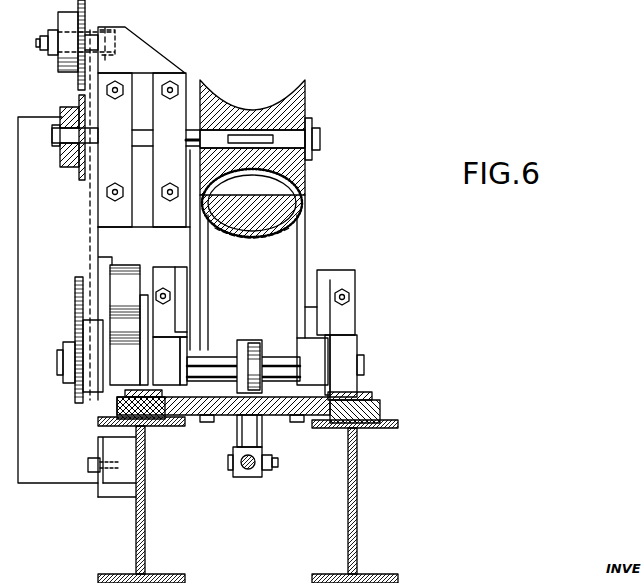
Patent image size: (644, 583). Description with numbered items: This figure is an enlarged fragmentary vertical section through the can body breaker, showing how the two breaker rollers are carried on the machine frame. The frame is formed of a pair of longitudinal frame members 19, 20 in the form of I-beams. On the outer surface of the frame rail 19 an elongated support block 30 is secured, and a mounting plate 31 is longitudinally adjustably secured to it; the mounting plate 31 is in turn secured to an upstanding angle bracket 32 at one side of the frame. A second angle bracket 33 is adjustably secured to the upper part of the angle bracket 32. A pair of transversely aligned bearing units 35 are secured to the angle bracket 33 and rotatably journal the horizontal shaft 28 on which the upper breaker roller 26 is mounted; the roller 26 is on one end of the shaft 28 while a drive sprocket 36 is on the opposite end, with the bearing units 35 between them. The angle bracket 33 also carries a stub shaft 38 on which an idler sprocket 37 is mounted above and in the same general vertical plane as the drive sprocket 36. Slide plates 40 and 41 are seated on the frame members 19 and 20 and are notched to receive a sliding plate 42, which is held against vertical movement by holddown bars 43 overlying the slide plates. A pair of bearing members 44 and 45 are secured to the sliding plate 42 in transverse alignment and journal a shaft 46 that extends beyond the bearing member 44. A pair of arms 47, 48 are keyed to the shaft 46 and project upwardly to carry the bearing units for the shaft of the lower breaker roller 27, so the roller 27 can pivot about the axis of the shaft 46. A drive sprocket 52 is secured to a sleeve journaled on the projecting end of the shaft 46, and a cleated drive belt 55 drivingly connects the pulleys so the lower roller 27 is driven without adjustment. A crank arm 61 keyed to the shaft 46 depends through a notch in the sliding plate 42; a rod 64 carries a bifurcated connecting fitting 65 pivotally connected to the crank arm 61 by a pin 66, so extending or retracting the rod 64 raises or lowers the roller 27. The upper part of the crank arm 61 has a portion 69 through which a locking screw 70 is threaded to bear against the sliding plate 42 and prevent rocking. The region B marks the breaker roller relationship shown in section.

The longitudinal frame member 19 is at (146, 546).
The longitudinal frame member 20 is at (358, 536).
The upper breaker roller 26 is at (306, 106).
The lower breaker roller 27 is at (292, 264).
The horizontal shaft 28 is at (318, 142).
The ball B is at (306, 206).
The support block 30 is at (125, 498).
The mounting plate 31 is at (104, 486).
The angle bracket 32 is at (42, 484).
The second angle bracket 33 is at (142, 62).
The bearing units 35 is at (166, 207).
The drive sprocket 36 is at (70, 168).
The idler sprocket 37 is at (86, 22).
The stub shaft 38 is at (44, 42).
The slide plate 40 is at (152, 420).
The slide plate 41 is at (384, 414).
The sliding plate 42 is at (222, 418).
The holddown bars 43 is at (126, 390).
The bearing member 44 is at (168, 372).
The bearing member 45 is at (352, 350).
The shaft 46 is at (364, 368).
The arm 47 is at (196, 348).
The arm 48 is at (306, 350).
The drive sprocket 52 is at (76, 292).
The cleated drive belt 55 is at (112, 264).
The crank arm 61 is at (260, 442).
The rod 64 is at (246, 468).
The bifurcated connecting fitting 65 is at (252, 470).
The pin 66 is at (279, 463).
The portion 69 is at (225, 368).
The locking screw 70 is at (258, 342).